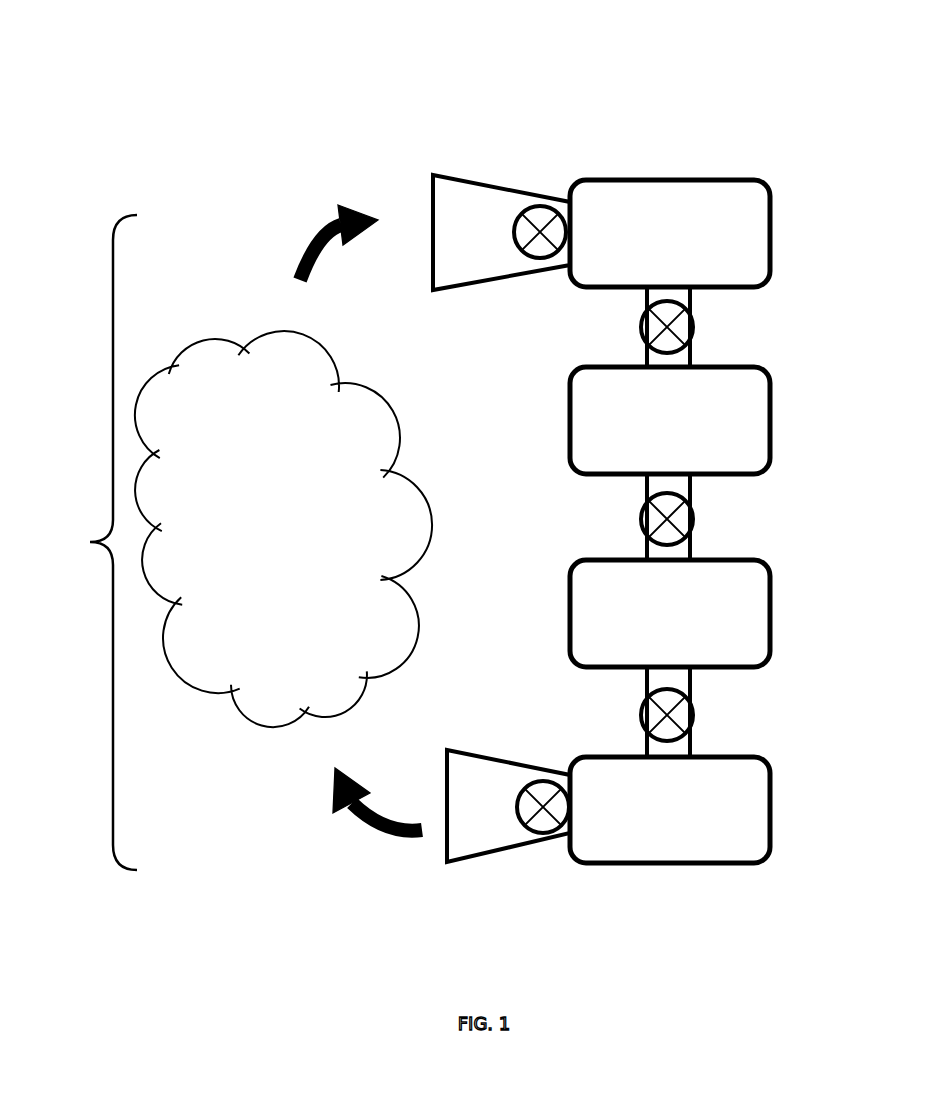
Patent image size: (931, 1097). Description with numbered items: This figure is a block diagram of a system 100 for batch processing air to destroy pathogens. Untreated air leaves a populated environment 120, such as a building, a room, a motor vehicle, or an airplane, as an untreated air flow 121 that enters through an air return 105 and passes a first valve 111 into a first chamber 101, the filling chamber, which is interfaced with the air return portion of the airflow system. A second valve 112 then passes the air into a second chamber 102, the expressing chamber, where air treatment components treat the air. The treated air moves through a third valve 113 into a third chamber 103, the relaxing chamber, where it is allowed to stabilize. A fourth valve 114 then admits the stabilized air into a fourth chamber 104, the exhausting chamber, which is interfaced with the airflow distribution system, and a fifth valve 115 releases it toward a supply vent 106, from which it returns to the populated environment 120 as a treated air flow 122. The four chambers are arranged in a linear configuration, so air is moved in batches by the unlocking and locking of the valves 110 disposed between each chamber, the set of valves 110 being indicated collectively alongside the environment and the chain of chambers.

The system 100 is at (716, 108).
The first chamber 101 is at (748, 222).
The second chamber 102 is at (748, 415).
The third chamber 103 is at (748, 605).
The fourth chamber 104 is at (748, 810).
The air return 105 is at (455, 190).
The supply vent 106 is at (468, 767).
The valves 110 is at (647, 357).
The first valve 111 is at (535, 248).
The second valve 112 is at (688, 323).
The third valve 113 is at (688, 517).
The fourth valve 114 is at (690, 712).
The fifth valve 115 is at (543, 823).
The populated environment 120 is at (268, 542).
The untreated air flow 121 is at (292, 234).
The treated air flow 122 is at (350, 838).